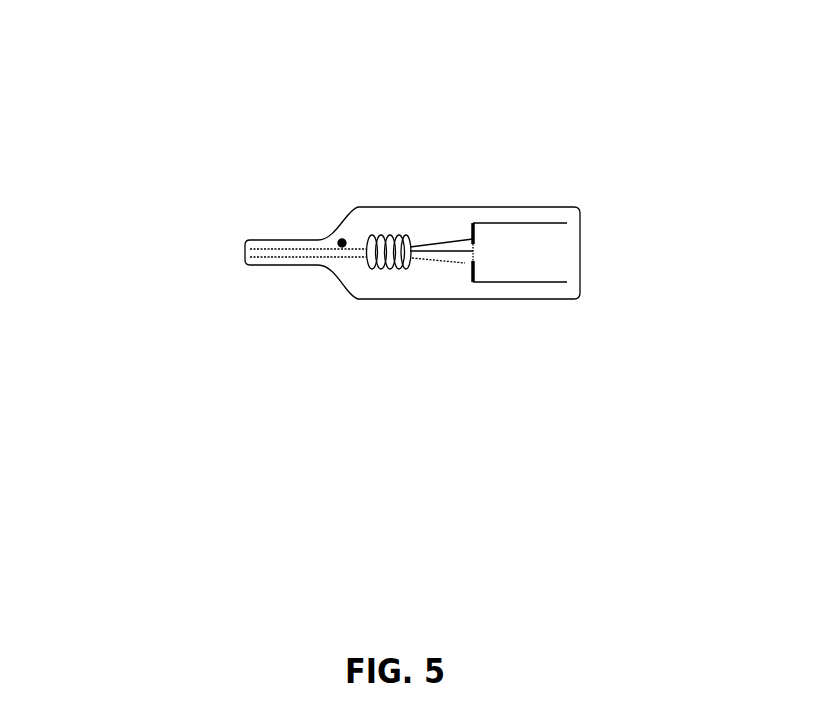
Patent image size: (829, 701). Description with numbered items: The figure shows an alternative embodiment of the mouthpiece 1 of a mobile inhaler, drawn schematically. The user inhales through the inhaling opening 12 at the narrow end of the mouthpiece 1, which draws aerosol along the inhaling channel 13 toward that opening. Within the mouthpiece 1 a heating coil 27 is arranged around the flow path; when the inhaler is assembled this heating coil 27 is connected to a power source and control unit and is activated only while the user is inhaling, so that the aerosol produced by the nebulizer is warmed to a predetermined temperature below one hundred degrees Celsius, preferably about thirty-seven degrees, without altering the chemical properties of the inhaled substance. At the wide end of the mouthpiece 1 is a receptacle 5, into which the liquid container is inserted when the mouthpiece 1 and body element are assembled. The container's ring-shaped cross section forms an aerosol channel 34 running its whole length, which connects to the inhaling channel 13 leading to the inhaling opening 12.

The mouthpiece 1 is at (413, 302).
The receptacle 5 is at (577, 258).
The inhaling opening 12 is at (205, 248).
The inhaling channel 13 is at (317, 255).
The heating coil 27 is at (407, 243).
The aerosol channel 34 is at (450, 257).